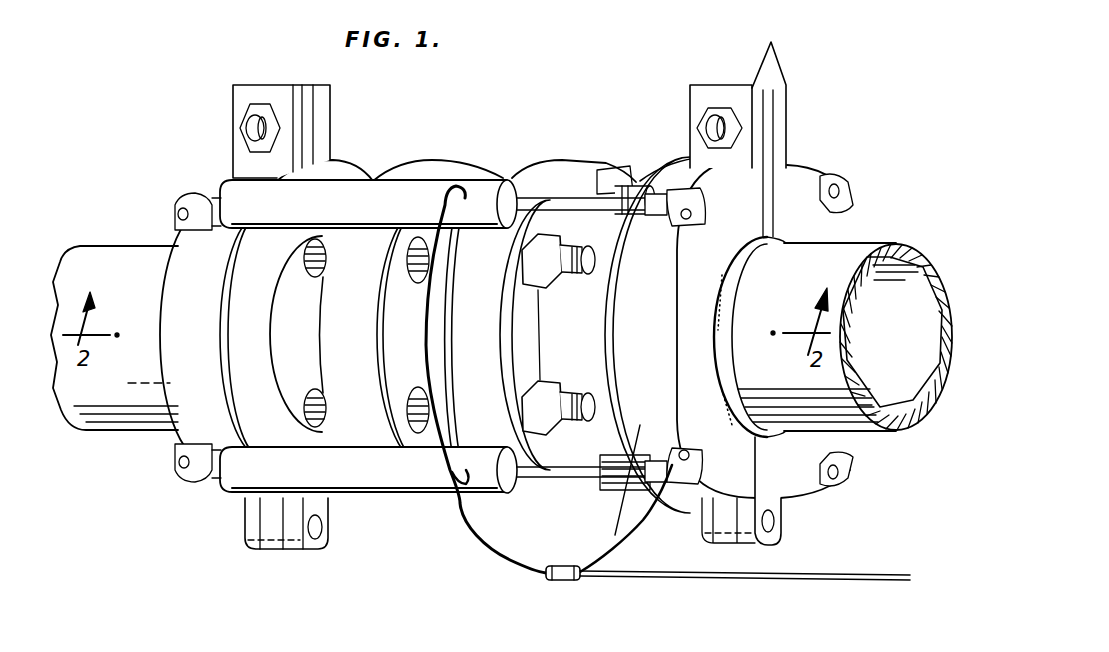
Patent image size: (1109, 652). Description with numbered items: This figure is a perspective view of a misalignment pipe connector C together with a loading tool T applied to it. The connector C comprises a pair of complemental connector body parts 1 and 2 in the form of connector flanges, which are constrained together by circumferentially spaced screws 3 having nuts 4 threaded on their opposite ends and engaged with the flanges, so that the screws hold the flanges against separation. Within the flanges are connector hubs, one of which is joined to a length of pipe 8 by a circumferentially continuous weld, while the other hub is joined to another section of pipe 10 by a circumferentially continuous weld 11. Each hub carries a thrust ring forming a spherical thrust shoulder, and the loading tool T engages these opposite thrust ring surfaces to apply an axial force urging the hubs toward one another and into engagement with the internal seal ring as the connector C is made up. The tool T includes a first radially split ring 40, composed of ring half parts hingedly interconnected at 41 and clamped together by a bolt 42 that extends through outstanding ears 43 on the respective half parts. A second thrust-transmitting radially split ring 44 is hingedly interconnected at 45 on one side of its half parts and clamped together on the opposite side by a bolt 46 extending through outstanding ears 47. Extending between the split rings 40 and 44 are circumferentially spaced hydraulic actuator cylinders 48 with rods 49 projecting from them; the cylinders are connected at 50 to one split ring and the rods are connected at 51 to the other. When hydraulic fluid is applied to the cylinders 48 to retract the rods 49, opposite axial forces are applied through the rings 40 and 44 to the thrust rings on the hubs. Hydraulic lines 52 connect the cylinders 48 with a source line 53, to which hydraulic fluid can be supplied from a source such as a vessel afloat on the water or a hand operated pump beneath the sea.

The connector body part 1 is at (359, 358).
The connector body part 2 is at (479, 352).
The screw 3 is at (583, 278).
The nut 4 is at (548, 385).
The pipe 8 is at (112, 430).
The pipe 10 is at (853, 253).
The weld 11 is at (738, 288).
The first radially split ring 40 is at (199, 325).
The hinge 41 is at (313, 550).
The bolt 42 is at (247, 130).
The ears 43 is at (328, 111).
The second radially split ring 44 is at (656, 347).
The hinge 45 is at (780, 523).
The bolt 46 is at (712, 130).
The ears 47 is at (772, 52).
The hydraulic actuator cylinder 48 is at (390, 194).
The rod 49 is at (553, 200).
The cylinder connection 50 is at (176, 216).
The rod connection 51 is at (676, 222).
The hydraulic line 52 is at (503, 553).
The source line 53 is at (783, 580).
The pipe connector C is at (583, 292).
The loading tool T is at (753, 285).